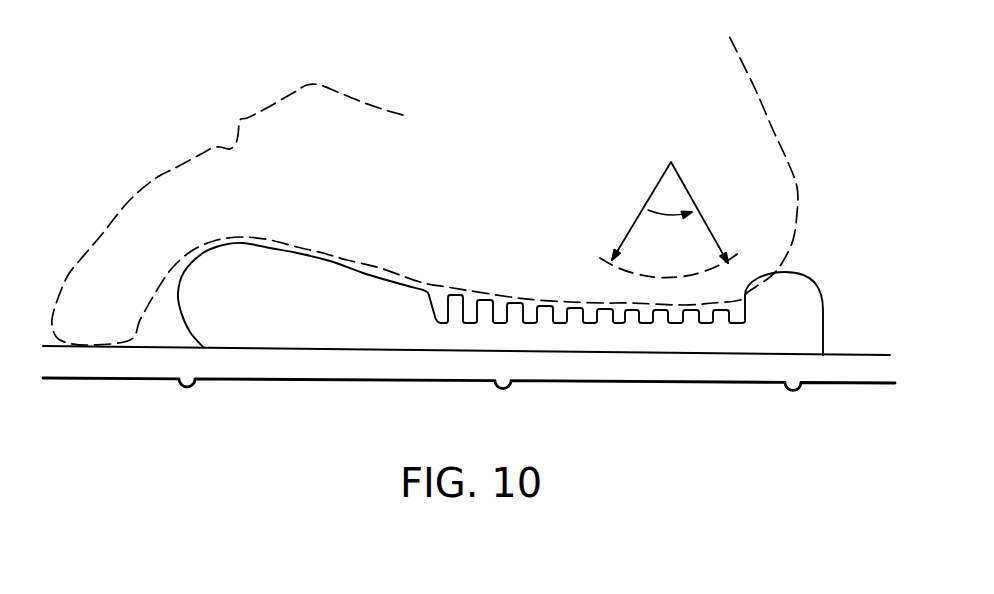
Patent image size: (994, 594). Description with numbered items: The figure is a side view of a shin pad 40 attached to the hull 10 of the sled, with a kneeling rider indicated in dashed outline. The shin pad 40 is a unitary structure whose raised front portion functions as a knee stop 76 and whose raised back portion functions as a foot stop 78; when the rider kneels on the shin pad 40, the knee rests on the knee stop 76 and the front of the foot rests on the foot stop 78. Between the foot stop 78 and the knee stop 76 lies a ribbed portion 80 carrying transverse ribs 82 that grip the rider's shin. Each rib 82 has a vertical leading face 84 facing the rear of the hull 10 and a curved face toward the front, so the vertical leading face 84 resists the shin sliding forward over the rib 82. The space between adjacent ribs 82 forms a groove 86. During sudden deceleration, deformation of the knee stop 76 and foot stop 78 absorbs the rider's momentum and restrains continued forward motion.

The hull 10 is at (277, 380).
The shin pad 40 is at (443, 366).
The knee stop 76 is at (792, 270).
The foot stop 78 is at (223, 247).
The ribbed portion 80 is at (612, 355).
The rib 82 is at (455, 292).
The vertical leading face 84 is at (441, 290).
The groove between teeth 86 is at (466, 292).